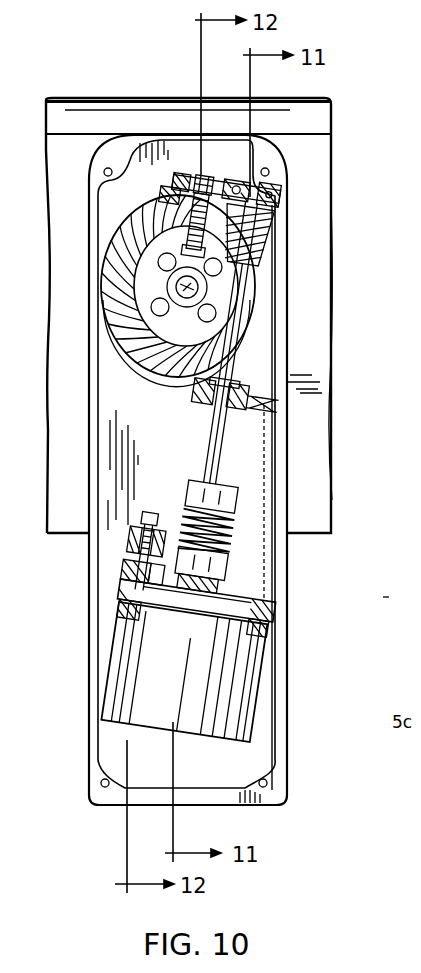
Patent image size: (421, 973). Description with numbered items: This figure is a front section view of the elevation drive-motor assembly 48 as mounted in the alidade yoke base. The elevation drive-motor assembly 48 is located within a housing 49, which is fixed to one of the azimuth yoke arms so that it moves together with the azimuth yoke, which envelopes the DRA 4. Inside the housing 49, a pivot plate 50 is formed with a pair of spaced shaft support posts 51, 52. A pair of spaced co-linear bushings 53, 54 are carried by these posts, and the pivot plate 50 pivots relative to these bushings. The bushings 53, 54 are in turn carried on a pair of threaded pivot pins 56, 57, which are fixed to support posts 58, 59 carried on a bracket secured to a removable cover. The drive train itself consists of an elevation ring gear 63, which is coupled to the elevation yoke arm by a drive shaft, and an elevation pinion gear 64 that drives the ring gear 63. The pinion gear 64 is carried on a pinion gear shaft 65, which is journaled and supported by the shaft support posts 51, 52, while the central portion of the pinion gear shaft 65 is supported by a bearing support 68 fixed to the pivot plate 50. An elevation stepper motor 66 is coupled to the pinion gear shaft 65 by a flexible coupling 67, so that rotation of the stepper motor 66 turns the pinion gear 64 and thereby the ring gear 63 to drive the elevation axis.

The DRA 4 is at (313, 160).
The elevation drive-motor assembly 48 is at (110, 547).
The housing 49 is at (273, 775).
The pivot plate 50 is at (267, 457).
The shaft support post 51 is at (221, 185).
The shaft support post 52 is at (262, 606).
The bushing 53 is at (190, 180).
The bushing 54 is at (125, 573).
The threaded pivot pin 56 is at (138, 258).
The threaded pivot pin 57 is at (145, 525).
The support post 58 is at (160, 202).
The support post 59 is at (137, 537).
The elevation ring gear 63 is at (157, 256).
The elevation pinion gear 64 is at (235, 248).
The pinion gear shaft 65 is at (232, 345).
The elevation stepper motor 66 is at (240, 680).
The flexible coupling 67 is at (230, 530).
The bearing support 68 is at (250, 397).